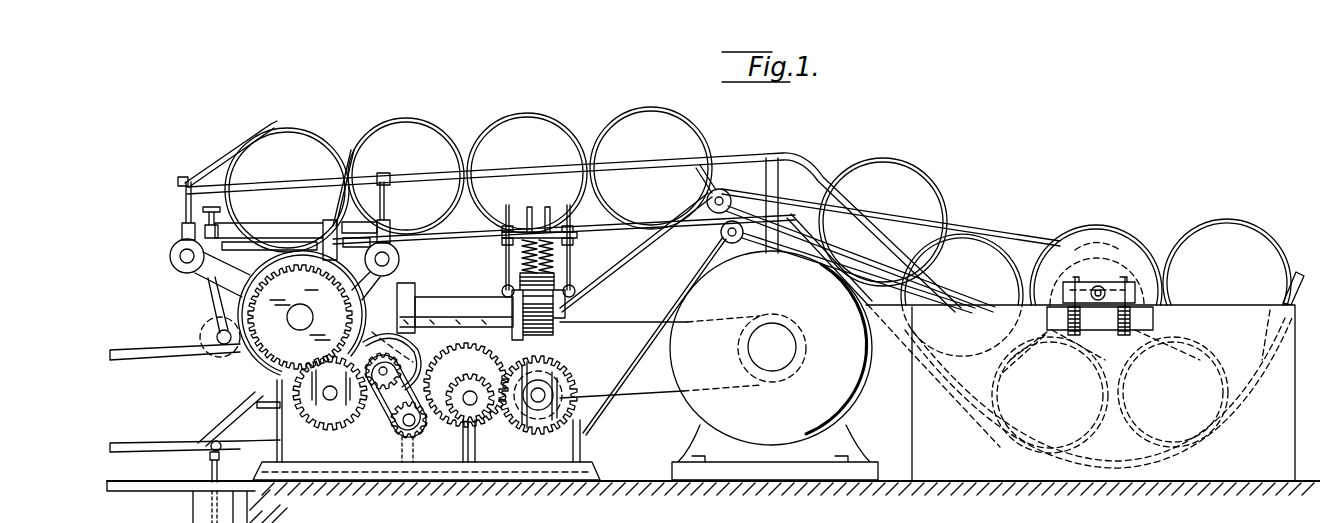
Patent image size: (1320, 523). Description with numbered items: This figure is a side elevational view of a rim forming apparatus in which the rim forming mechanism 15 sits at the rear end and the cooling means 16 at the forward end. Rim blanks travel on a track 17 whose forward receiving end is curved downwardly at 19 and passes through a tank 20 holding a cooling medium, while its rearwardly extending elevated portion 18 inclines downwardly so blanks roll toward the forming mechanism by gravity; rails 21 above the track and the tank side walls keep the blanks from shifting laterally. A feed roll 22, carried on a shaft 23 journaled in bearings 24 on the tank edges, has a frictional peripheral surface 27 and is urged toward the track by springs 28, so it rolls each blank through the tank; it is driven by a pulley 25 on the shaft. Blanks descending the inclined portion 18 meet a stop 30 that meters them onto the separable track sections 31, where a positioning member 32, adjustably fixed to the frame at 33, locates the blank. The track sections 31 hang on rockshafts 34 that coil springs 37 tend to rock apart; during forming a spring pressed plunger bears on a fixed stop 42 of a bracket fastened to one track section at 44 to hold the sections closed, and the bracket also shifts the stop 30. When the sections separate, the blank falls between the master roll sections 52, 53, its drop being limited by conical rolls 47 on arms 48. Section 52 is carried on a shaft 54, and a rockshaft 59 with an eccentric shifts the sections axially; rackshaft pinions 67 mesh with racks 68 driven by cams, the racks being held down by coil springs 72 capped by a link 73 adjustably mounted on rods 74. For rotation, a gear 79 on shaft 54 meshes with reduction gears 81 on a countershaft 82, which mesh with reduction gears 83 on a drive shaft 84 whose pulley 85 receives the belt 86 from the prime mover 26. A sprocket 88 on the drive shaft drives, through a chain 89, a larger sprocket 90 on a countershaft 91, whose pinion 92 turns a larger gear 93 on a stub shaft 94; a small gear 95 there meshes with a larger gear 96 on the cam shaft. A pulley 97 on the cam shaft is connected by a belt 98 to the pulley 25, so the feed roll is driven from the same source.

The rim forming mechanism 15 is at (251, 377).
The cooling means 16 is at (1231, 478).
The track 17 is at (793, 216).
The elevated portion of track 18 is at (605, 228).
The curved receiving end of track 19 is at (903, 352).
The tank 20 is at (915, 428).
The rails 21 is at (860, 196).
The feed roll 22 is at (1112, 247).
The shaft 23 is at (1103, 287).
The bearings 24 is at (1077, 283).
The pulley 25 is at (1090, 235).
The prime mover 26 is at (708, 400).
The frictional peripheral surface 27 is at (1103, 233).
The springs 28 is at (1057, 330).
The stop 30 is at (348, 150).
The track sections 31 is at (200, 270).
The positioning member 32 is at (203, 167).
The adjustable securing point 33 is at (180, 180).
The rockshafts 34 is at (187, 213).
The coil springs 37 is at (210, 205).
The fixed stop 42 is at (330, 227).
The bracket securing point 44 is at (387, 233).
The conical rolls 47 is at (215, 360).
The arms 48 is at (213, 299).
The master roll section 52 is at (958, 521).
The master roll section 53 is at (989, 511).
The shaft 54 is at (777, 513).
The rockshaft 59 is at (460, 315).
The pinions 67 is at (548, 322).
The racks 68 is at (572, 292).
The coil springs 72 is at (522, 232).
The link 73 is at (538, 207).
The rods 74 is at (549, 232).
The gear 79 is at (313, 319).
The reduction gears 81 is at (345, 414).
The countershaft 82 is at (330, 398).
The reduction gears 83 is at (386, 330).
The drive shaft 84 is at (417, 363).
The pulley 85 is at (373, 414).
The belt 86 is at (627, 322).
The sprocket 88 is at (465, 349).
The chain 89 is at (490, 360).
The sprocket 90 is at (418, 432).
The countershaft 91 is at (401, 432).
The pinion 92 is at (432, 483).
The gear 93 is at (480, 425).
The stub shaft 94 is at (530, 394).
The gear 95 is at (484, 487).
The gear 96 is at (590, 410).
The pulley 97 is at (557, 485).
The belt 98 is at (980, 227).